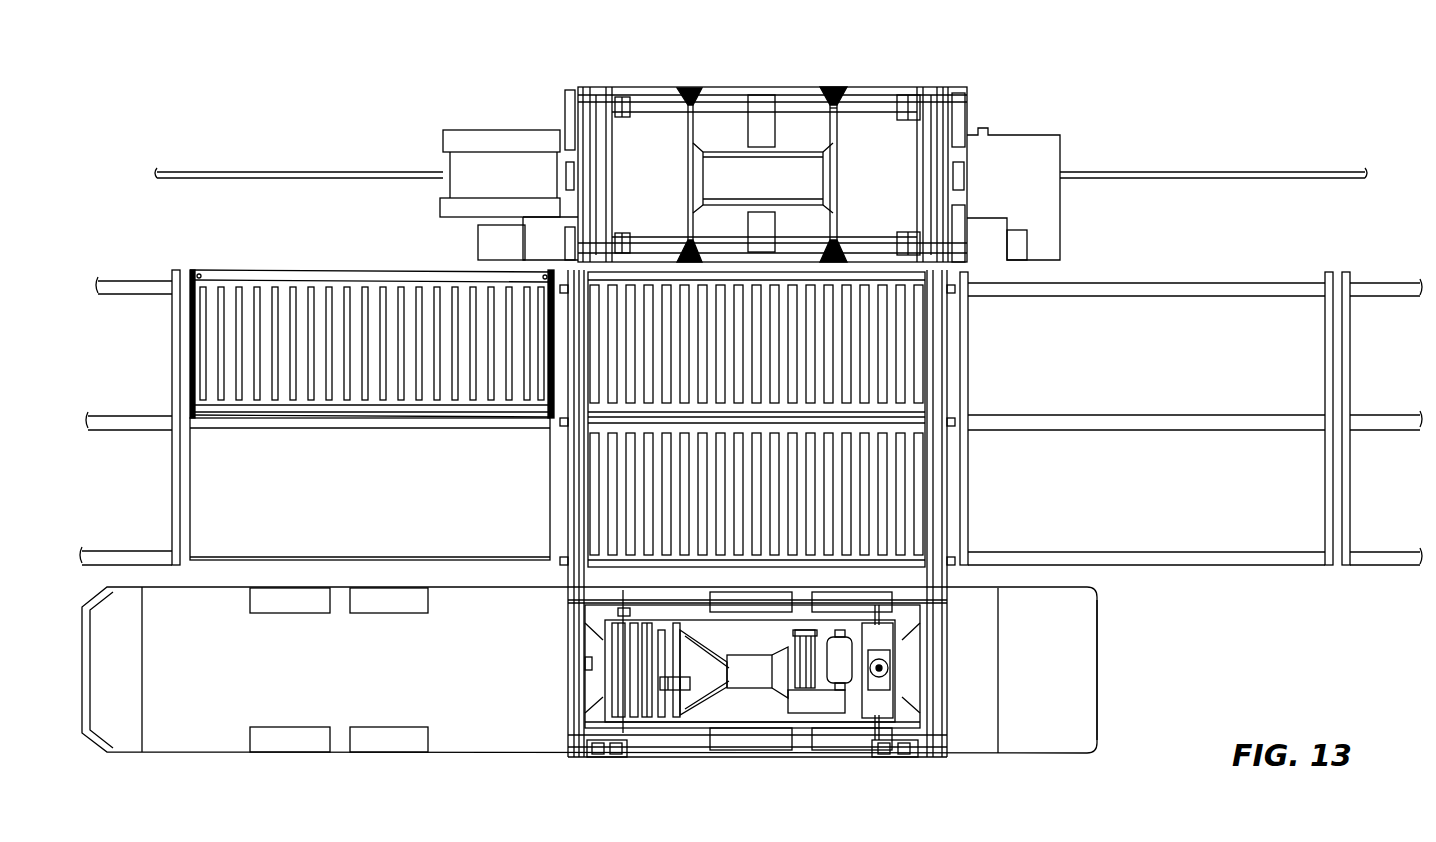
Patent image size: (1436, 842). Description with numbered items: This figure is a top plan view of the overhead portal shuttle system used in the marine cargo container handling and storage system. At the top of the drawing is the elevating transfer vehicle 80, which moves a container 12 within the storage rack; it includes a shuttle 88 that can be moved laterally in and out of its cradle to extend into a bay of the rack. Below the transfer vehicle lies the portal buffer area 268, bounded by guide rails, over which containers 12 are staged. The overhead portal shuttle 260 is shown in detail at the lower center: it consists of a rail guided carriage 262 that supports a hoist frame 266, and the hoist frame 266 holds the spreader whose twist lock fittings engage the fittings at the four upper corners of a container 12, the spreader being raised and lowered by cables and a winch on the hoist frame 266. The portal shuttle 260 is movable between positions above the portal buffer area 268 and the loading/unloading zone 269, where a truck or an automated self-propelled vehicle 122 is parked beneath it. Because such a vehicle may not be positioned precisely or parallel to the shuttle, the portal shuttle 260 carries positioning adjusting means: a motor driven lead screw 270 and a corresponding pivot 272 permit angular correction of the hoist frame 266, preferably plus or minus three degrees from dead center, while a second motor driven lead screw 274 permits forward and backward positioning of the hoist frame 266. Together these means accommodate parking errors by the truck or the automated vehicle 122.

The container 12 is at (423, 368).
The elevating transfer vehicle 80 is at (640, 88).
The shuttle 88 is at (835, 107).
The automated self-propelled vehicle 122 is at (477, 727).
The overhead portal shuttle 260 is at (923, 686).
The rail guided carriage 262 is at (610, 610).
The hoist frame 266 is at (730, 623).
The portal buffer area 268 is at (252, 420).
The loading/unloading zone 269 is at (1100, 707).
The motor driven lead screw 270 is at (687, 712).
The pivot 272 is at (888, 666).
The motor driven lead screw 274 is at (563, 660).